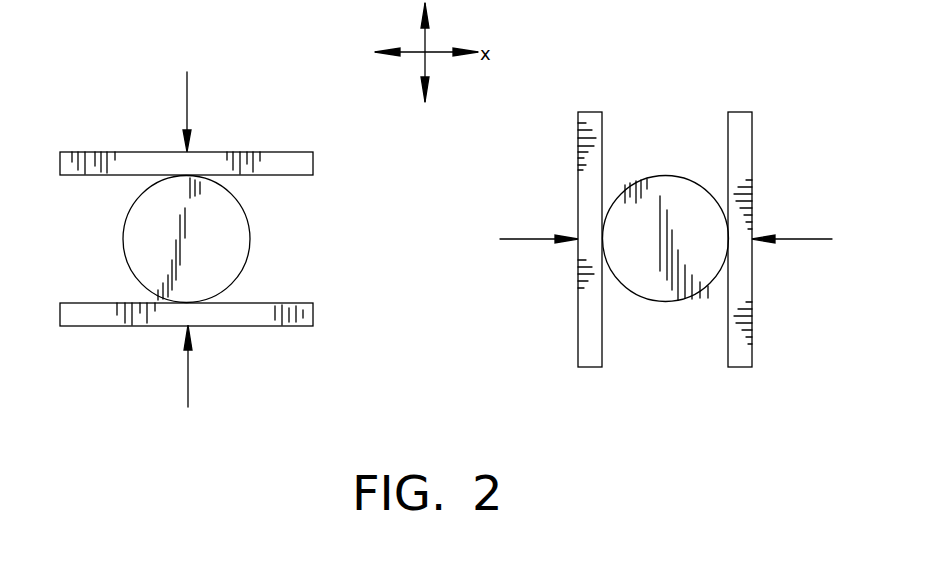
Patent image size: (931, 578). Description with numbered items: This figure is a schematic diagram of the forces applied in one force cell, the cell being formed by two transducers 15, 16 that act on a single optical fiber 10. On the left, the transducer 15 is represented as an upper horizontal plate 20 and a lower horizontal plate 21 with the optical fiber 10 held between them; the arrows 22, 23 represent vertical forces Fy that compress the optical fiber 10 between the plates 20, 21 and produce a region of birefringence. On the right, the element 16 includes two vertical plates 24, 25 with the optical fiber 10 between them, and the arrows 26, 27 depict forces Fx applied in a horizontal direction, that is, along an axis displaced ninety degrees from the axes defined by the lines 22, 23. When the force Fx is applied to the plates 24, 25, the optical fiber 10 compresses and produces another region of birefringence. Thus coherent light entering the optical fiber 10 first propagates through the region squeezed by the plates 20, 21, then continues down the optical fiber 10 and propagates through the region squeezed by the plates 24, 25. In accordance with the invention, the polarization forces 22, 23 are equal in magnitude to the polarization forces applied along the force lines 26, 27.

The optical fiber 10 is at (248, 212).
The transducer 15 is at (96, 90).
The transducer 16 is at (680, 384).
The upper horizontal plate 20 is at (273, 152).
The lower horizontal plate 21 is at (272, 327).
The arrow 22 is at (188, 102).
The arrow 23 is at (188, 377).
The vertical plate 24 is at (578, 152).
The vertical plate 25 is at (752, 152).
The arrow 26 is at (530, 238).
The arrow 27 is at (800, 238).